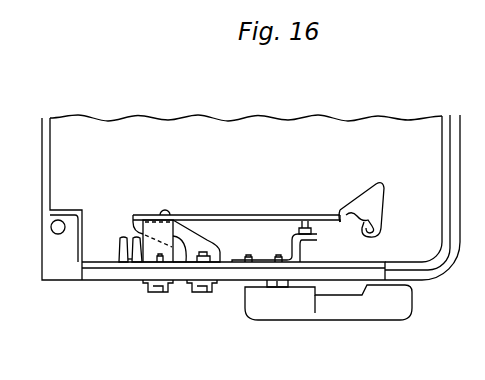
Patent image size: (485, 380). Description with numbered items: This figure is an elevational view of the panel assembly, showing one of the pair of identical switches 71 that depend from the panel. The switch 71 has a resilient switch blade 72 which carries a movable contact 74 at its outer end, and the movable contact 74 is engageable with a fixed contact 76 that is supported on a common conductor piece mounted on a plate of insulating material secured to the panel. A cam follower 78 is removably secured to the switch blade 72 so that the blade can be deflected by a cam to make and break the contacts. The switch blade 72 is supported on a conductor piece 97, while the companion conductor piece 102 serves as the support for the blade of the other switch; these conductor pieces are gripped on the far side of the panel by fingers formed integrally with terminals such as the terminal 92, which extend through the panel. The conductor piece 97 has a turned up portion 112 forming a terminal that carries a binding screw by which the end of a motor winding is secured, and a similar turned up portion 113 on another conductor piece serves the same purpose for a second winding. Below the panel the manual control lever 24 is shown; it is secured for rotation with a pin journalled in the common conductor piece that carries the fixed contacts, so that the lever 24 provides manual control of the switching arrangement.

The manual control lever 24 is at (272, 308).
The switch 71 is at (143, 283).
The resilient switch blade 72 is at (248, 214).
The movable contact 74 is at (283, 214).
The fixed contact 76 is at (298, 231).
The cam follower 78 is at (378, 192).
The terminal 92 is at (192, 284).
The conductor piece 97 is at (158, 232).
The conductor piece 102 is at (187, 238).
The turned up portion 112 is at (134, 234).
The turned up portion 113 is at (118, 238).